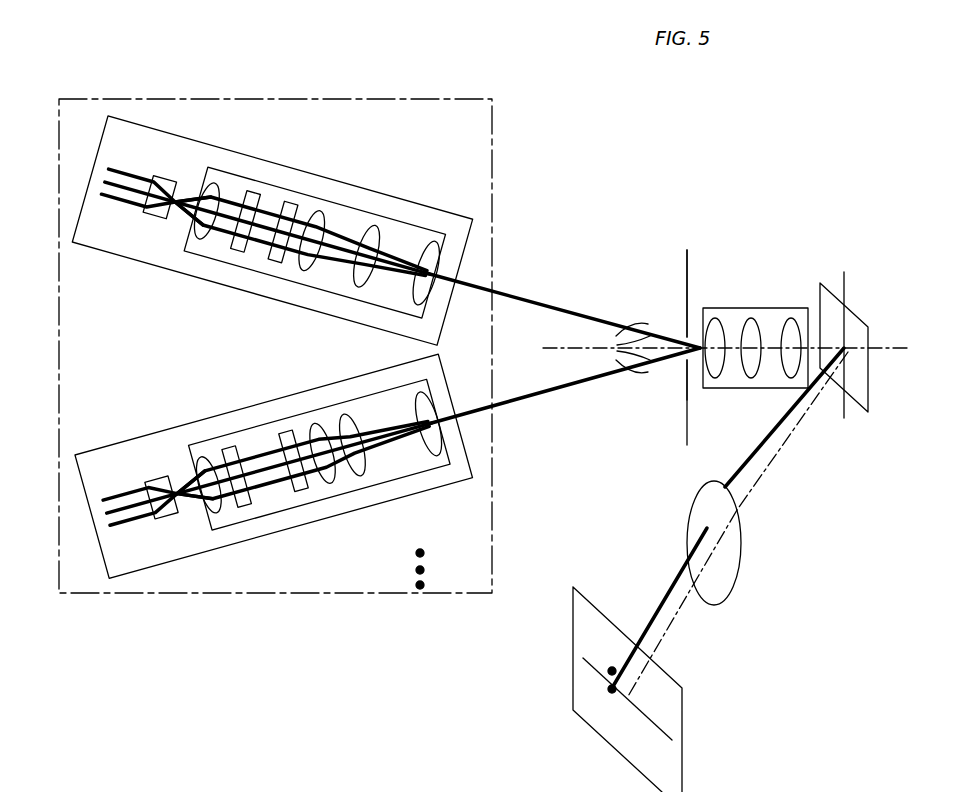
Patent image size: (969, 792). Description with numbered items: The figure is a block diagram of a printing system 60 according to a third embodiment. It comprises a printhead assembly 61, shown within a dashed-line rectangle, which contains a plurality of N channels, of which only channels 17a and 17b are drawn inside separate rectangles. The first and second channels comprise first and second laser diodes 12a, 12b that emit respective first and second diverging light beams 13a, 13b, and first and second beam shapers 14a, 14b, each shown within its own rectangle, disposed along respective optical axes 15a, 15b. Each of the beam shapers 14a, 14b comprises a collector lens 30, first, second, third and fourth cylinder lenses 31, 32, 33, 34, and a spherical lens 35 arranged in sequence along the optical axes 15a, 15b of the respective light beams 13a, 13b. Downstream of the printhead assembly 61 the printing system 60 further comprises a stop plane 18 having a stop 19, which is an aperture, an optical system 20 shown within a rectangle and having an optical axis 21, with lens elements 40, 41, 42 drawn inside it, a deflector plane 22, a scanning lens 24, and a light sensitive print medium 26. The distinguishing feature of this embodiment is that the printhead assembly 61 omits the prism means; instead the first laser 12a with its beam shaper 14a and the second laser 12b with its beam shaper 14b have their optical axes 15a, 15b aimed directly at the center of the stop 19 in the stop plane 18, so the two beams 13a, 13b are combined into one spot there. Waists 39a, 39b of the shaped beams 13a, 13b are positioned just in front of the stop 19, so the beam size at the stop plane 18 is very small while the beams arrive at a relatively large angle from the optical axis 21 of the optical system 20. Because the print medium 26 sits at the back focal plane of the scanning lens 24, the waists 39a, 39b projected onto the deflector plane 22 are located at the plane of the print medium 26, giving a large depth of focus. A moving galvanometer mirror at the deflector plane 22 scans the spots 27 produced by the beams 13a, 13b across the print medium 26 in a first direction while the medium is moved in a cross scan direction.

The printing system 60 is at (638, 243).
The printhead assembly 61 is at (310, 99).
The first channel 17a is at (132, 258).
The second channel 17b is at (155, 432).
The first laser diode 12a is at (148, 212).
The second laser diode 12b is at (160, 514).
The first light beam 13a is at (190, 198).
The second light beam 13b is at (180, 480).
The first beam shaper 14a is at (348, 202).
The second beam shaper 14b is at (268, 422).
The collector lens 30 is at (198, 235).
The first cylinder lens 31 is at (238, 252).
The second cylinder lens 32 is at (276, 262).
The third cylinder lens 33 is at (309, 265).
The fourth cylinder lens 34 is at (361, 280).
The spherical lens 35 is at (418, 303).
The first optical axis 15a is at (532, 297).
The second optical axis 15b is at (538, 400).
The first beam waist 39a is at (637, 327).
The second beam waist 39b is at (638, 372).
The stop plane 18 is at (687, 264).
The stop 19 is at (677, 358).
The optical axis 21 is at (670, 346).
The optical system 20 is at (747, 308).
The relay lens 40 is at (714, 327).
The relay lens 41 is at (750, 365).
The relay lens 42 is at (788, 368).
The deflector plane 22 is at (857, 317).
The scanning lens 24 is at (732, 573).
The light sensitive print medium 26 is at (683, 727).
The spots 27 is at (612, 672).